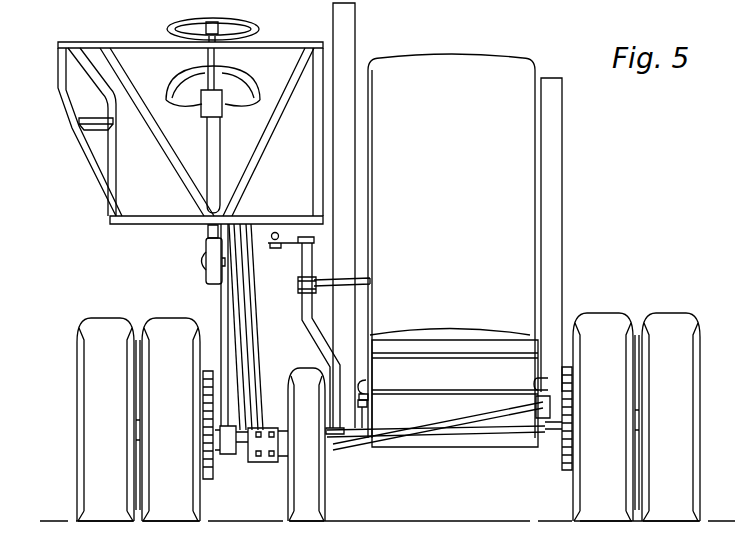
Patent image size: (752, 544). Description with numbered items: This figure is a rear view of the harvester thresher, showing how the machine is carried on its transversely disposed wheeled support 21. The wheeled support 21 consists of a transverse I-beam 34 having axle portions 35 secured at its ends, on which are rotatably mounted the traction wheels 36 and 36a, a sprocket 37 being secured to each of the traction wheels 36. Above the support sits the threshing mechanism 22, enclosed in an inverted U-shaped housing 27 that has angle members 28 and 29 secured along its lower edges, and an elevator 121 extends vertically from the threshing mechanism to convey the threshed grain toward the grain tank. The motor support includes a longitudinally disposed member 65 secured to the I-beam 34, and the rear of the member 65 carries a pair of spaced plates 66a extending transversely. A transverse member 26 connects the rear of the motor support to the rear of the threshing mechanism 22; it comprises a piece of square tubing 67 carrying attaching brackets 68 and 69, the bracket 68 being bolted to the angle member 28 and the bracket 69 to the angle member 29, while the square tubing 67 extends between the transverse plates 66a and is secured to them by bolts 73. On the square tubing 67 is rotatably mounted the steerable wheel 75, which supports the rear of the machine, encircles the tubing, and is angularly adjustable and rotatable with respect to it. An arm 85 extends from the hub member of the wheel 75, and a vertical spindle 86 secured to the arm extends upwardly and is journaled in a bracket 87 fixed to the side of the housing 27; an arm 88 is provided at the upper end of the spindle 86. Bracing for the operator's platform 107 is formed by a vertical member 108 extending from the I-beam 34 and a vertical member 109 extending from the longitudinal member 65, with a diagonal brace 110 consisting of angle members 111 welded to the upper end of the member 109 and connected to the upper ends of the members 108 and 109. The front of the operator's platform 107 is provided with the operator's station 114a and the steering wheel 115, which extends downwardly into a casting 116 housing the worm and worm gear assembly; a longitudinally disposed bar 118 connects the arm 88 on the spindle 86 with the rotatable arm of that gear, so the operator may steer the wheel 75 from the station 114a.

The wheeled support 21 is at (692, 299).
The threshing mechanism 22 is at (498, 54).
The transverse member 26 is at (455, 440).
The inverted U-shaped housing 27 is at (440, 63).
The angle member 28 is at (539, 381).
The angle member 29 is at (367, 383).
The transverse I-beam 34 is at (503, 441).
The axle portions 35 is at (550, 430).
The traction wheels 36 is at (170, 321).
The traction wheels 36a is at (674, 294).
The sprocket 37 is at (209, 480).
The longitudinally disposed member 65 is at (242, 455).
The spaced plates 66a is at (253, 463).
The square tubing 67 is at (413, 438).
The attaching bracket 68 is at (539, 411).
The attaching bracket 69 is at (364, 422).
The bolts 73 is at (272, 431).
The steerable wheel 75 is at (331, 503).
The arm 85 is at (331, 441).
The vertical spindle 86 is at (310, 334).
The bracket 87 is at (345, 279).
The arm 88 is at (297, 285).
The operator's platform 107 is at (80, 178).
The vertical member 108 is at (233, 291).
The vertical member 109 is at (240, 345).
The diagonal brace 110 is at (252, 306).
The angle members 111 is at (244, 350).
The operator's station 114a is at (247, 92).
The steering wheel 115 is at (244, 27).
The casting 116 is at (205, 249).
The longitudinally disposed bar 118 is at (257, 238).
The elevator 121 is at (347, 38).